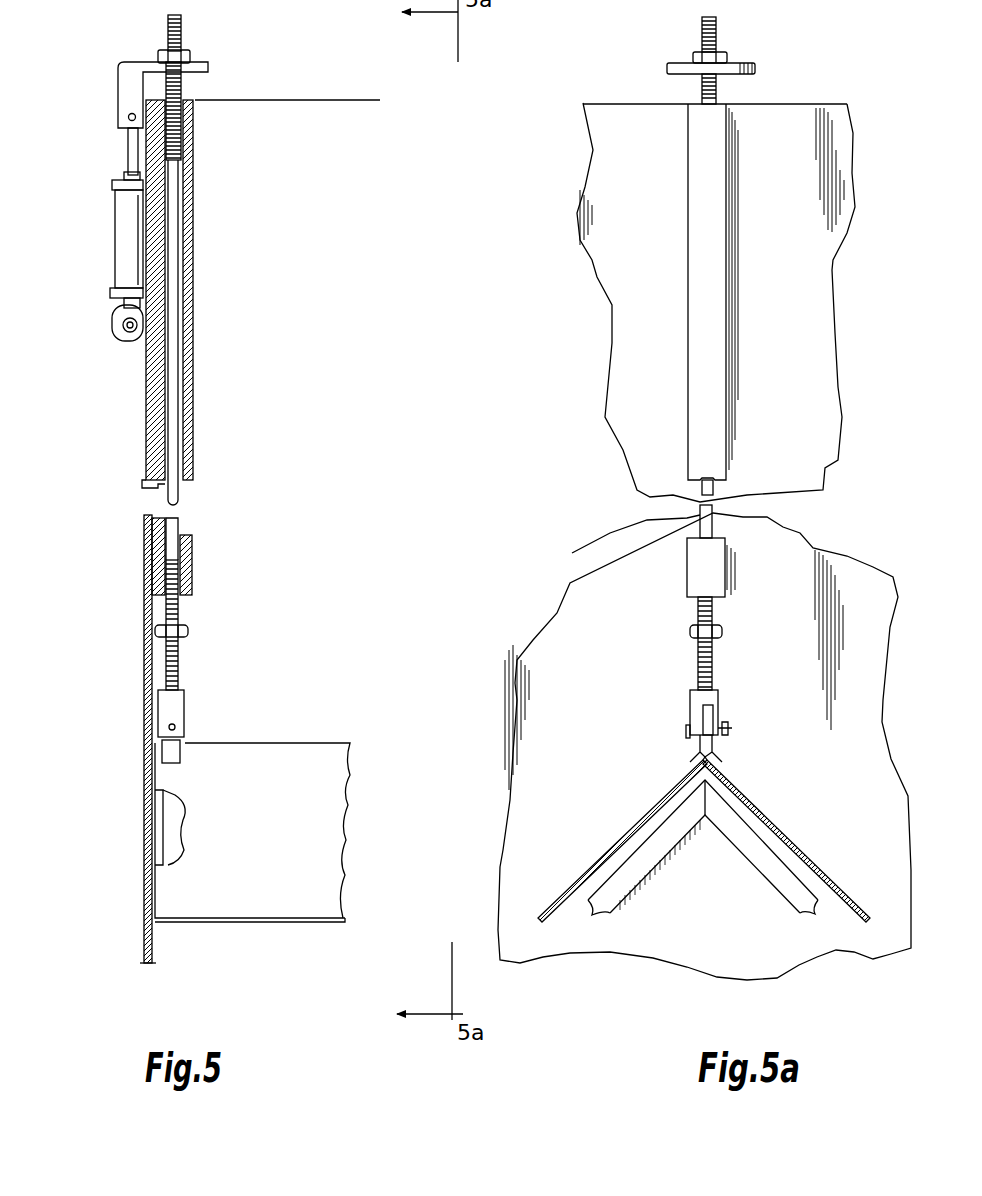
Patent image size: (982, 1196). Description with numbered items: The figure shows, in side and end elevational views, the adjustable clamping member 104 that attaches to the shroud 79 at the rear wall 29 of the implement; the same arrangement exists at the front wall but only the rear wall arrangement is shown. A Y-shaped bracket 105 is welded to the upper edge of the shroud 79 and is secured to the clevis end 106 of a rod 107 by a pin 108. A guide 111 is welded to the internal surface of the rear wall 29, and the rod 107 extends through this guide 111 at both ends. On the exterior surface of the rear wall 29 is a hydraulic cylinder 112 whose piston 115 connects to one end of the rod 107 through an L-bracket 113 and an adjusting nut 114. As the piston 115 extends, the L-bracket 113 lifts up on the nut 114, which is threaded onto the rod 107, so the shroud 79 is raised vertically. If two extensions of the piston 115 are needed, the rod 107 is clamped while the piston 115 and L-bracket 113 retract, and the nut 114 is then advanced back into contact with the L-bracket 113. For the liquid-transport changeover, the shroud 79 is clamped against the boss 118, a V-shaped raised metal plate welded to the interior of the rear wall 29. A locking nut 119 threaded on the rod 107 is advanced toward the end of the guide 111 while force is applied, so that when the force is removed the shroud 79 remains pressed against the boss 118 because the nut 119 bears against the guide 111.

In FIG. 5, the rear wall 29 is at (144, 610).
In FIG. 5, the shroud 79 is at (288, 758).
In FIG. 5A, the shroud 79 is at (790, 835).
In FIG. 5, the adjustable clamping member 104 is at (118, 462).
In FIG. 5, the Y-shaped bracket 105 is at (170, 752).
In FIG. 5A, the Y-shaped bracket 105 is at (722, 757).
In FIG. 5, the clevis end 106 is at (175, 708).
In FIG. 5A, the clevis end 106 is at (697, 703).
In FIG. 5, the rod 107 is at (178, 610).
In FIG. 5A, the rod 107 is at (713, 608).
In FIG. 5, the pin 108 is at (168, 727).
In FIG. 5A, the pin 108 is at (730, 728).
In FIG. 5, the guide 111 is at (193, 320).
In FIG. 5A, the guide 111 is at (712, 343).
In FIG. 5, the hydraulic cylinder 112 is at (123, 237).
In FIG. 5, the L-bracket 113 is at (128, 85).
In FIG. 5A, the L-bracket 113 is at (755, 68).
In FIG. 5, the adjusting nut 114 is at (190, 57).
In FIG. 5A, the adjusting nut 114 is at (722, 52).
In FIG. 5, the piston 115 is at (128, 155).
In FIG. 5, the boss 118 is at (157, 845).
In FIG. 5A, the boss 118 is at (623, 878).
In FIG. 5, the locking nut 119 is at (186, 631).
In FIG. 5A, the locking nut 119 is at (722, 633).